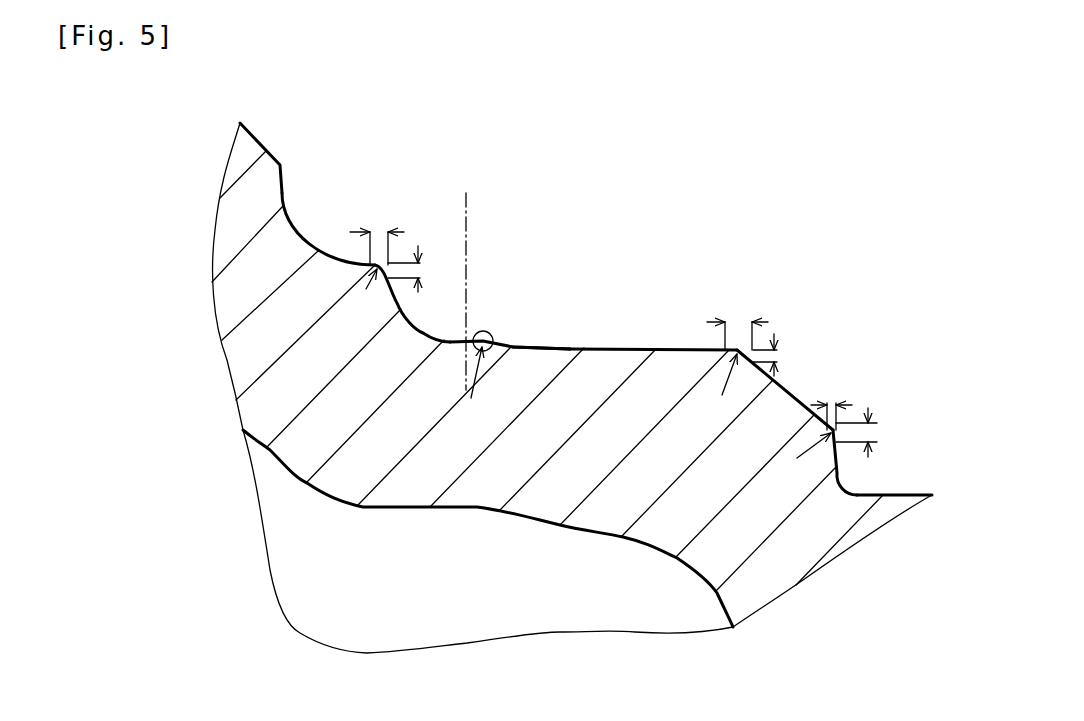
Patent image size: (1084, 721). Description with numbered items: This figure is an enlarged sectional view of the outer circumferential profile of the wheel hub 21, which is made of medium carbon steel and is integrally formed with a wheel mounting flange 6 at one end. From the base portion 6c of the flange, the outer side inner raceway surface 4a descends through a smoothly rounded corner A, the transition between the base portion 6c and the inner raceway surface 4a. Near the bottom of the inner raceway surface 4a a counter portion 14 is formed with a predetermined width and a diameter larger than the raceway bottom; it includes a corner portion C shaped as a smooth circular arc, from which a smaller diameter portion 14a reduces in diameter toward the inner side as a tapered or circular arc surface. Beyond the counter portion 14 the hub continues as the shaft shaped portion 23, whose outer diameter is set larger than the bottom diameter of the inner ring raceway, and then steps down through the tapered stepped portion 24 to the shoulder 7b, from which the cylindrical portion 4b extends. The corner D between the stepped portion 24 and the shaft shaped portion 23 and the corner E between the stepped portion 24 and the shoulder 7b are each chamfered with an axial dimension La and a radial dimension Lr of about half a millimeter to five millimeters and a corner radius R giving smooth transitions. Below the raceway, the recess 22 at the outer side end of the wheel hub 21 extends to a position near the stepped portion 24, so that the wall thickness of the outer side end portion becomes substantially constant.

The wheel mounting flange 6 is at (228, 155).
The base portion 6c is at (300, 230).
The wheel hub 21 is at (292, 328).
The inner raceway surface 4a is at (425, 333).
The counter portion 14 is at (497, 218).
The smaller diameter portion 14a is at (513, 347).
The corner portion C is at (483, 331).
The shaft shaped portion 23 is at (633, 349).
The stepped portion 24 is at (790, 383).
The shoulder 7b is at (838, 470).
The cylindrical portion 4b is at (895, 495).
The recess 22 is at (703, 582).
The corner A is at (414, 313).
The corner D is at (757, 351).
The corner E is at (844, 426).